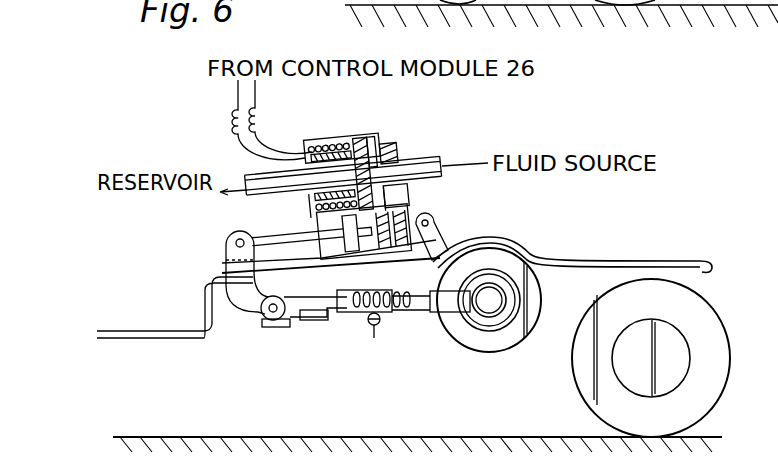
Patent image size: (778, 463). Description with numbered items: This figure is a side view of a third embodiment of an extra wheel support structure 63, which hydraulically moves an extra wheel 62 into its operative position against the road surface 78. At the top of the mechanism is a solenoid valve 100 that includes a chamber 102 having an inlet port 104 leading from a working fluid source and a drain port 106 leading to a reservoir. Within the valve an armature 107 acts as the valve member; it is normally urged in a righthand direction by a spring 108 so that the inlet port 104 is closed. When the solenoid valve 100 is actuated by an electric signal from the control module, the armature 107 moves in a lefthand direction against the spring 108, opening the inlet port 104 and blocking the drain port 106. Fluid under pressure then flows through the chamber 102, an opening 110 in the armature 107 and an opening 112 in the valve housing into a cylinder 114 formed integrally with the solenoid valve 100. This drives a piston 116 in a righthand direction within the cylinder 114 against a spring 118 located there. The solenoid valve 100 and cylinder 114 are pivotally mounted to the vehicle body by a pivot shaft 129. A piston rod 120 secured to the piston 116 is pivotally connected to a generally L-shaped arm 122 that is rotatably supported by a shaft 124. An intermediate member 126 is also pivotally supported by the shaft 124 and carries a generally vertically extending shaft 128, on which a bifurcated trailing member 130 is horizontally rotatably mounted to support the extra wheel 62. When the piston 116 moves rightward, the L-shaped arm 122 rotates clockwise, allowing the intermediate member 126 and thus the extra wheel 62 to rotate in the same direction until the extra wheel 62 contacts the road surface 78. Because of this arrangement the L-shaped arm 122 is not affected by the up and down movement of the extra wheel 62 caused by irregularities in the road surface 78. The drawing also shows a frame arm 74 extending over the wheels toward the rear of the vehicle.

The extra wheel support structure 63 is at (327, 363).
The extra wheel 62 is at (505, 350).
The frame arm 74 is at (592, 258).
The road surface 78 is at (465, 437).
The solenoid valve 100 is at (353, 125).
The chamber 102 is at (378, 146).
The inlet port 104 is at (400, 156).
The drain port 106 is at (304, 160).
The armature 107 is at (369, 132).
The spring 108 is at (331, 143).
The opening 110 is at (380, 198).
The opening 112 is at (322, 220).
The cylinder 114 is at (440, 208).
The piston 116 is at (322, 252).
The spring 118 is at (385, 252).
The piston rod 120 is at (232, 272).
The L-shaped arm 122 is at (242, 298).
The shaft 124 is at (272, 314).
The intermediate member 126 is at (302, 322).
The shaft 128 is at (374, 338).
The pivot shaft 129 is at (433, 219).
The trailing member 130 is at (446, 318).